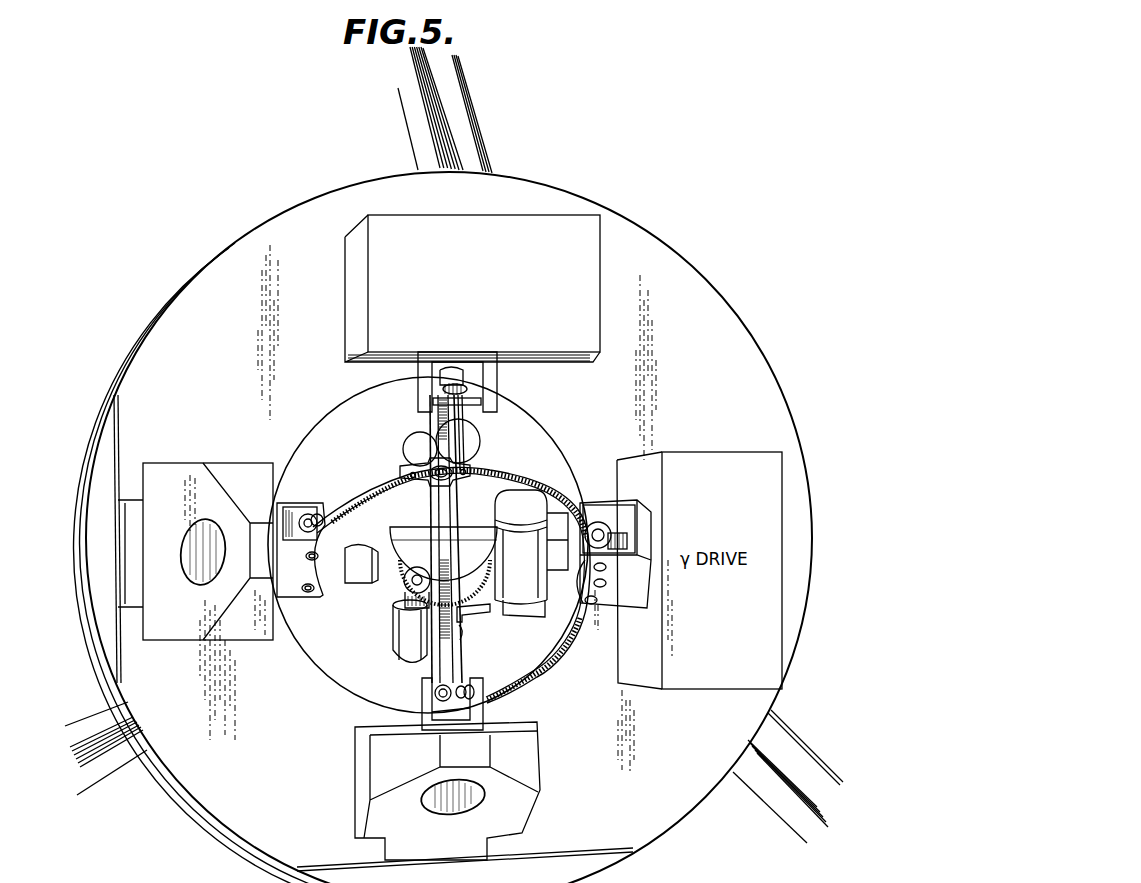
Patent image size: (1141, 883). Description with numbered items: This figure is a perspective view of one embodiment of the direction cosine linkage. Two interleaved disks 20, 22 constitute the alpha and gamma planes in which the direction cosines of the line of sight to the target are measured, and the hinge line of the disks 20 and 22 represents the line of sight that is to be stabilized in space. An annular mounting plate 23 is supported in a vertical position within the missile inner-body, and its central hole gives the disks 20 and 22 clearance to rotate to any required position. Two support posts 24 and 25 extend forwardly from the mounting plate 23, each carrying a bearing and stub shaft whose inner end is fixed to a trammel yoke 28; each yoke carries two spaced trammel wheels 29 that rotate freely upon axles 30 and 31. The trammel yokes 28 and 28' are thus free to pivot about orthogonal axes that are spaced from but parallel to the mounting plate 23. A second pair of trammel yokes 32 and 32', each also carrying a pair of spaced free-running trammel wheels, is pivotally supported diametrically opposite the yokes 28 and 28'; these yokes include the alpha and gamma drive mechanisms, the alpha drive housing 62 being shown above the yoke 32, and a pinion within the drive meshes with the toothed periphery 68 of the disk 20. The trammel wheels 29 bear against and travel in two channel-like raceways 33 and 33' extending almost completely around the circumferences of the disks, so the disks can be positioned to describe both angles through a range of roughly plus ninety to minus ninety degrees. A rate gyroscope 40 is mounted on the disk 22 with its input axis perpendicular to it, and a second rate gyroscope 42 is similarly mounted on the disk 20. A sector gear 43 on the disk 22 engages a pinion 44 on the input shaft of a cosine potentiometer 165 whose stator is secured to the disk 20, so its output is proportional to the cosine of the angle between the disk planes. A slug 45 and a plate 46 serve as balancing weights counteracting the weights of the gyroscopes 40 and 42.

The disk 20 is at (462, 422).
The disk 22 is at (366, 532).
The annular mounting plate 23 is at (292, 751).
The support post 24 is at (241, 642).
The support post 25 is at (541, 773).
The trammel yoke 28 is at (301, 565).
The trammel yoke 28' is at (477, 704).
The trammel wheels 29 is at (321, 513).
The axle 30 is at (307, 514).
The axle 31 is at (314, 595).
The trammel yoke 32 is at (471, 382).
The trammel yoke 32' is at (614, 565).
The channel-like raceway 33 is at (427, 539).
The channel-like raceway 33' is at (451, 574).
The rate gyroscope 40 is at (528, 560).
The rate gyroscope 42 is at (468, 443).
The sector gear 43 is at (486, 548).
The pinion 44 is at (405, 585).
The slug 45 is at (360, 578).
The plate 46 is at (468, 620).
The alpha drive housing 62 is at (477, 322).
The toothed periphery 68 is at (412, 438).
The cosine potentiometer 165 is at (410, 641).